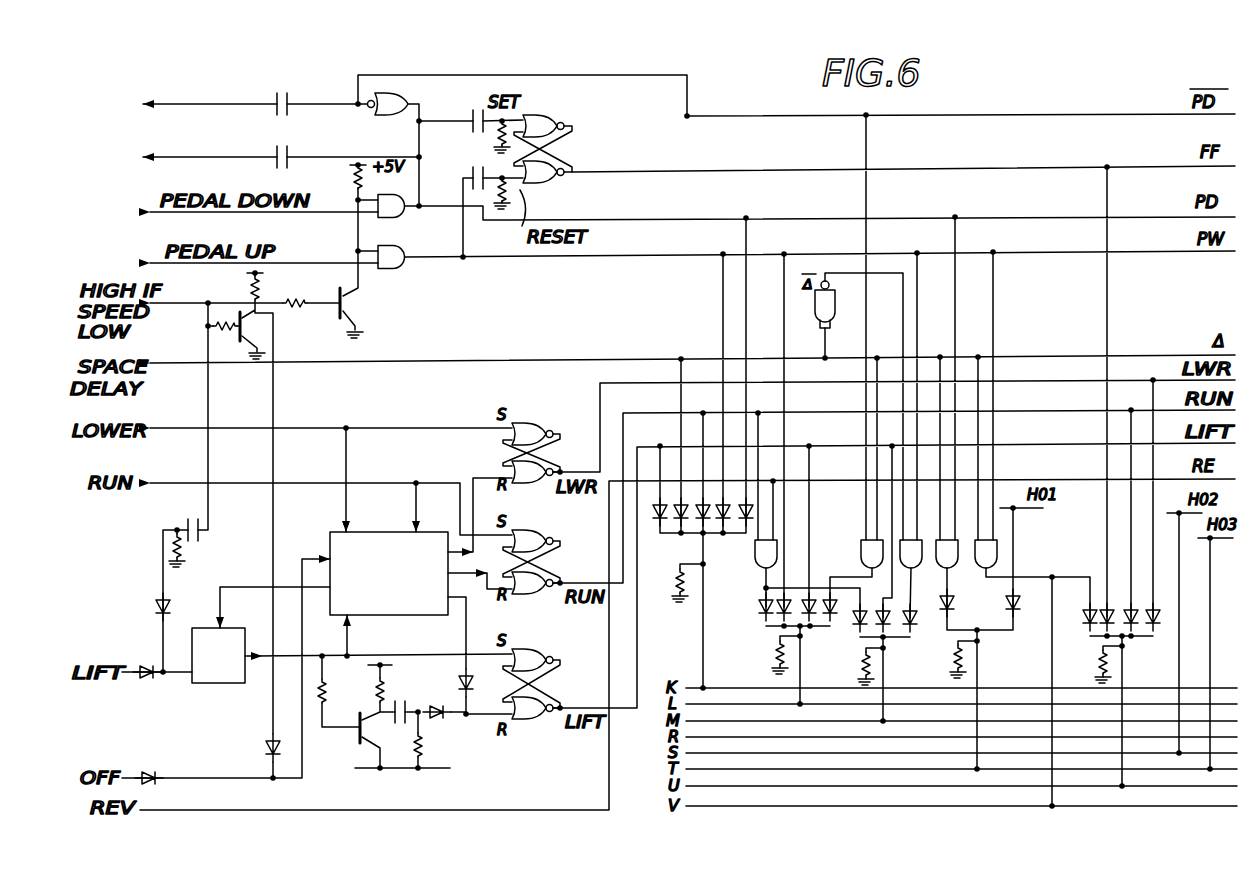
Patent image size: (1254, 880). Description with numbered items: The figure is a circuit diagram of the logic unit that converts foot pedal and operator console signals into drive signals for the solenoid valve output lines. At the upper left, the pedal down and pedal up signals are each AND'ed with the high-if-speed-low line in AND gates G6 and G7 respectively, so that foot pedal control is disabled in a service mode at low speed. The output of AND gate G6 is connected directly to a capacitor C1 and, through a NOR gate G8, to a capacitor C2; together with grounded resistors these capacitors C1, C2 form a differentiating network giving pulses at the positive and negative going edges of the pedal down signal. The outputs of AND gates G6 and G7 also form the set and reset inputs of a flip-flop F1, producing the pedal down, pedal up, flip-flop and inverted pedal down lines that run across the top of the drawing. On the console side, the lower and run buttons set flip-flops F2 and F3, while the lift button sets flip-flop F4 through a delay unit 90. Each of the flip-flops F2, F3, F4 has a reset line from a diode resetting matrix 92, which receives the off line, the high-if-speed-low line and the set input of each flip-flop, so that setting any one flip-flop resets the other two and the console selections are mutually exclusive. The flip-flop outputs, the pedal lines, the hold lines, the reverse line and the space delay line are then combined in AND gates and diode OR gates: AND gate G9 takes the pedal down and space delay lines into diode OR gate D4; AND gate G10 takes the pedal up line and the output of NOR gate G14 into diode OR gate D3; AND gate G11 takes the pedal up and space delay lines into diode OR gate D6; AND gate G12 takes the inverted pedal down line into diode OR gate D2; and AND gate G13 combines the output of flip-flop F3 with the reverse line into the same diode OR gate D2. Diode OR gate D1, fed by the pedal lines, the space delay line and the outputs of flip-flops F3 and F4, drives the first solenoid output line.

The capacitor C2 is at (288, 94).
The capacitor C1 is at (294, 150).
The NOR gate G8 is at (388, 114).
The AND gate G6 is at (391, 216).
The AND gate G7 is at (391, 267).
The flip-flop F1 is at (543, 156).
The flip-flop F2 is at (518, 453).
The flip-flop F3 is at (518, 562).
The flip-flop F4 is at (518, 684).
The NOR gate G14 is at (813, 309).
The AND gate G13 is at (751, 561).
The AND gate G12 is at (854, 554).
The AND gate G10 is at (922, 562).
The AND gate G9 is at (954, 562).
The AND gate G11 is at (990, 573).
The diode OR gate D1 is at (699, 527).
The diode OR gate D2 is at (789, 620).
The diode OR gate D3 is at (874, 628).
The diode OR gate D4 is at (980, 610).
The diode OR gate D6 is at (1110, 629).
The delay unit 90 is at (203, 668).
The diode resetting matrix 92 is at (388, 616).